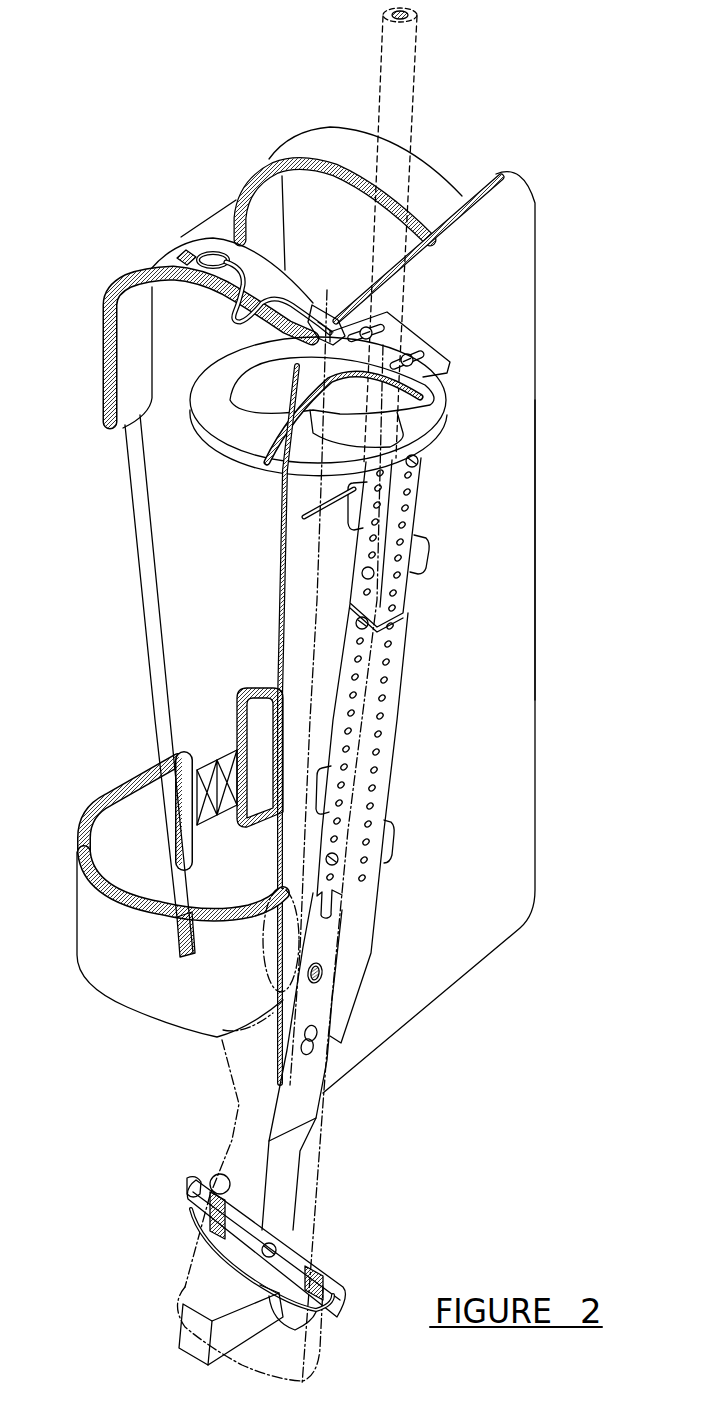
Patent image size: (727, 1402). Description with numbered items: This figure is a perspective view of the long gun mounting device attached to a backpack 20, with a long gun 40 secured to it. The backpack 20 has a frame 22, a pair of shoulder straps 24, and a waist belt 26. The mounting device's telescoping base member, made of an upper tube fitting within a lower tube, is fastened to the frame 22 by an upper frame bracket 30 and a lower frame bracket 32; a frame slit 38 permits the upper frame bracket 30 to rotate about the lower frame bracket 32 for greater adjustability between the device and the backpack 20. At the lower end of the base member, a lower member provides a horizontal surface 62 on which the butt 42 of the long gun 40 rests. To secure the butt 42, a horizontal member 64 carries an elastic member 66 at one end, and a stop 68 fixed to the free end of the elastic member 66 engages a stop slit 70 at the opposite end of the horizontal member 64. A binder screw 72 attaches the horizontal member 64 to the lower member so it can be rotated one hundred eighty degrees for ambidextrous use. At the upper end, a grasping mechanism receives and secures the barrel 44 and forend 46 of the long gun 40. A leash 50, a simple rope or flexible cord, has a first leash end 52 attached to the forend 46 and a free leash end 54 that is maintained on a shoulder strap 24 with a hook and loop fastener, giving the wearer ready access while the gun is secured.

The backpack 20 is at (532, 184).
The frame 22 is at (536, 531).
The shoulder straps 24 is at (213, 237).
The waist belt 26 is at (77, 893).
The upper frame bracket 30 is at (428, 555).
The lower frame bracket 32 is at (396, 843).
The frame slit 38 is at (310, 520).
The long gun 40 is at (314, 631).
The butt 42 is at (179, 1265).
The barrel 44 is at (378, 91).
The forend 46 is at (324, 459).
The leash 50 is at (233, 320).
The first leash end 52 is at (313, 303).
The free leash end 54 is at (178, 255).
The horizontal surface 62 is at (235, 1331).
The horizontal member 64 is at (305, 1253).
The elastic member 66 is at (298, 1309).
The stop 68 is at (214, 1177).
The stop slit 70 is at (198, 1180).
The binder screw 72 is at (269, 1250).